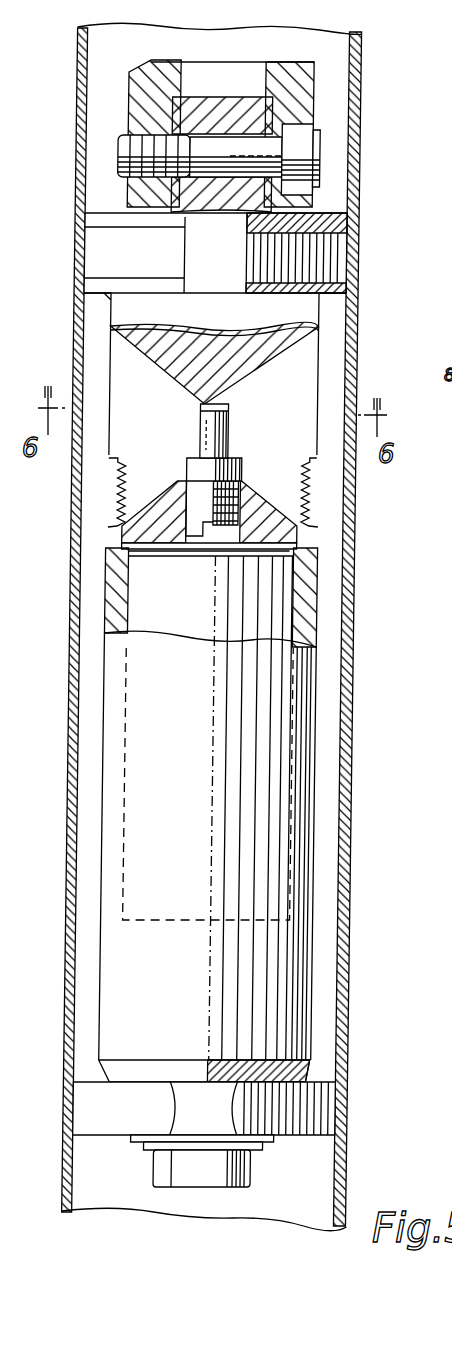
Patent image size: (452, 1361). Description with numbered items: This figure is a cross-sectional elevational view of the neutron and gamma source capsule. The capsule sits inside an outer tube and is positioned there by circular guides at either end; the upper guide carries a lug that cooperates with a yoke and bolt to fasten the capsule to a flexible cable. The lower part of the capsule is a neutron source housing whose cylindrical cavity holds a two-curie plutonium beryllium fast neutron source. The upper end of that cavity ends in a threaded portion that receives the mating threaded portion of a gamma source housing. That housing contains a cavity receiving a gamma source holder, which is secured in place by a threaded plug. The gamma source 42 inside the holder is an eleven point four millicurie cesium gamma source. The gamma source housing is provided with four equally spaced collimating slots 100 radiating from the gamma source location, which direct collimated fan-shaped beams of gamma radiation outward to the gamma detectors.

The gamma source 42 is at (215, 430).
The collimating slots 100 is at (117, 363).